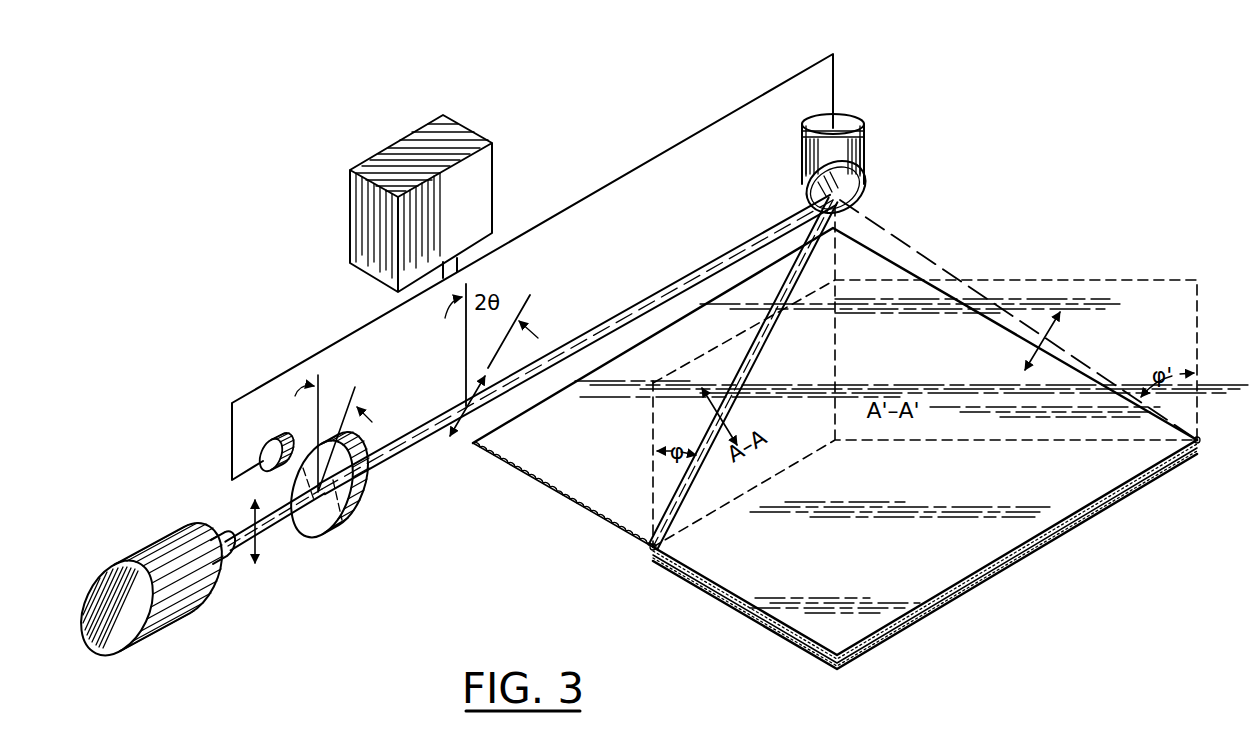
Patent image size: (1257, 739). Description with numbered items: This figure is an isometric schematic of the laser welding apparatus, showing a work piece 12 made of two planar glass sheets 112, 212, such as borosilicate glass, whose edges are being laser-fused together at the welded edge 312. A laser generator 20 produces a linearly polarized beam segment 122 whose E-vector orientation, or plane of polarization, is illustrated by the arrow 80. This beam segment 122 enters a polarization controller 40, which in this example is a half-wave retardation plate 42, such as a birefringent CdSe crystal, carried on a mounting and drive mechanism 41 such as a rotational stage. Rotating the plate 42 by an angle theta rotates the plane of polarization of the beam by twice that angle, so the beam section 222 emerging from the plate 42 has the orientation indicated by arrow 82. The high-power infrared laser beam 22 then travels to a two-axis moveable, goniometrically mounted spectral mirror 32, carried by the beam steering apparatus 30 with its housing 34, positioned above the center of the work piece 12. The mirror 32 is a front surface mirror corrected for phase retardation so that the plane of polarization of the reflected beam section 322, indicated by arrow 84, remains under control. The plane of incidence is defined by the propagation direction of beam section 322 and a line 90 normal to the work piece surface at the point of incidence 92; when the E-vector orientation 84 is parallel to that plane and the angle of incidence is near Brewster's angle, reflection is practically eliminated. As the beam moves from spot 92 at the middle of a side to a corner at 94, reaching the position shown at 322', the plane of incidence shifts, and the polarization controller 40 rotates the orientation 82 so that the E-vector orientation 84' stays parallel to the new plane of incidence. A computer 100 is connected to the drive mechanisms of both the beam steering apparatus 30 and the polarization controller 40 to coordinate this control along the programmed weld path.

The work piece 12 is at (1040, 544).
The laser generator 20 is at (137, 540).
The laser beam 22 is at (640, 298).
The beam steering apparatus 30 is at (867, 121).
The spectral mirror 32 is at (810, 190).
The scanner housing 34 is at (866, 160).
The polarization controller 40 is at (291, 436).
The mounting and drive mechanism 41 is at (261, 458).
The half-wave retardation plate 42 is at (360, 514).
The arrow indicating plane of polarization 80 is at (263, 543).
The arrow indicating plane of polarization 82 is at (462, 432).
The arrow indicating plane of polarization 84 is at (708, 383).
The plane of polarization 84' is at (1072, 341).
The line normal to the work piece surface 90 is at (653, 408).
The point of incidence 92 is at (648, 550).
The corner point 94 is at (1200, 440).
The computer 100 is at (494, 172).
The planar glass sheet 112 is at (886, 622).
The beam segment 122 is at (247, 528).
The planar glass sheet 212 is at (855, 659).
The beam section 222 is at (447, 424).
The welded edge 312 is at (545, 502).
The beam section 322 is at (743, 374).
The beam position 322' is at (1018, 320).